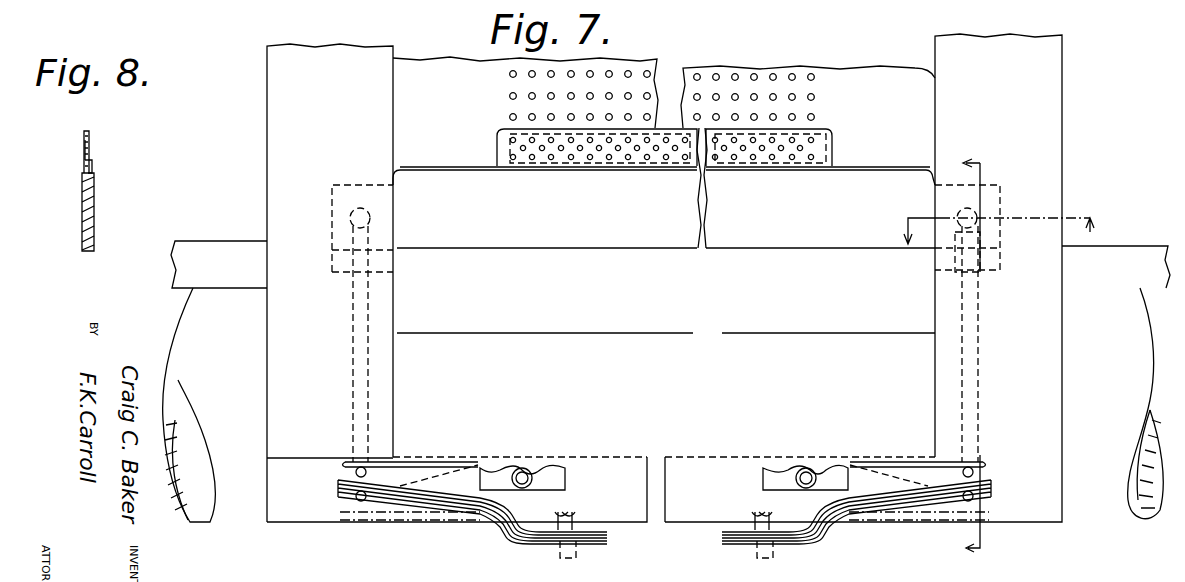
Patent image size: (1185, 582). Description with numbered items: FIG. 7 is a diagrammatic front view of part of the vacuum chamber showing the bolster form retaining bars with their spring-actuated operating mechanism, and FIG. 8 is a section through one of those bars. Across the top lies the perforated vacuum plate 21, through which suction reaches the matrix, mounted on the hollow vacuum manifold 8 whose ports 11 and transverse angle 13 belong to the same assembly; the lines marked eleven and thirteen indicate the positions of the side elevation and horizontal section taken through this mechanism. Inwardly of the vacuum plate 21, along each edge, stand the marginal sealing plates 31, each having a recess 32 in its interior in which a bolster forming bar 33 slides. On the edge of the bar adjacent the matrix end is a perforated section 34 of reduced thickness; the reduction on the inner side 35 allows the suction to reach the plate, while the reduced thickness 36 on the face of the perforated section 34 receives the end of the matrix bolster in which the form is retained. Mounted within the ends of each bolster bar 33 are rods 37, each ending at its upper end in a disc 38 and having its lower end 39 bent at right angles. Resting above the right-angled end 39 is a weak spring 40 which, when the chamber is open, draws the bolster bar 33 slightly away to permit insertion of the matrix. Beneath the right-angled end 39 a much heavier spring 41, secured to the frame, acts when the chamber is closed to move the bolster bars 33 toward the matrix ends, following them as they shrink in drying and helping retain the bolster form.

In FIG. 7, the hollow vacuum manifold 8 is at (176, 414).
In FIG. 7, the ports of the trunnion brackets 11 is at (961, 355).
In FIG. 7, the transverse angle 13 is at (995, 231).
In FIG. 7, the perforated vacuum plate 21 is at (452, 57).
In FIG. 7, the marginal sealing plate 31 is at (268, 385).
In FIG. 7, the recess 32 is at (332, 263).
In FIG. 7, the bolster forming bar 33 is at (552, 248).
In FIG. 8, the bolster forming bar 33 is at (94, 232).
In FIG. 7, the perforated section 34 is at (526, 160).
In FIG. 8, the perforated section 34 is at (89, 130).
In FIG. 8, the inner side 35 is at (80, 148).
In FIG. 8, the reduced thickness on the face 36 is at (91, 155).
In FIG. 7, the rod 37 is at (353, 366).
In FIG. 7, the disc 38 is at (350, 222).
In FIG. 7, the right-angled end 39 is at (355, 470).
In FIG. 7, the weak spring 40 is at (420, 466).
In FIG. 7, the heavier spring 41 is at (418, 508).